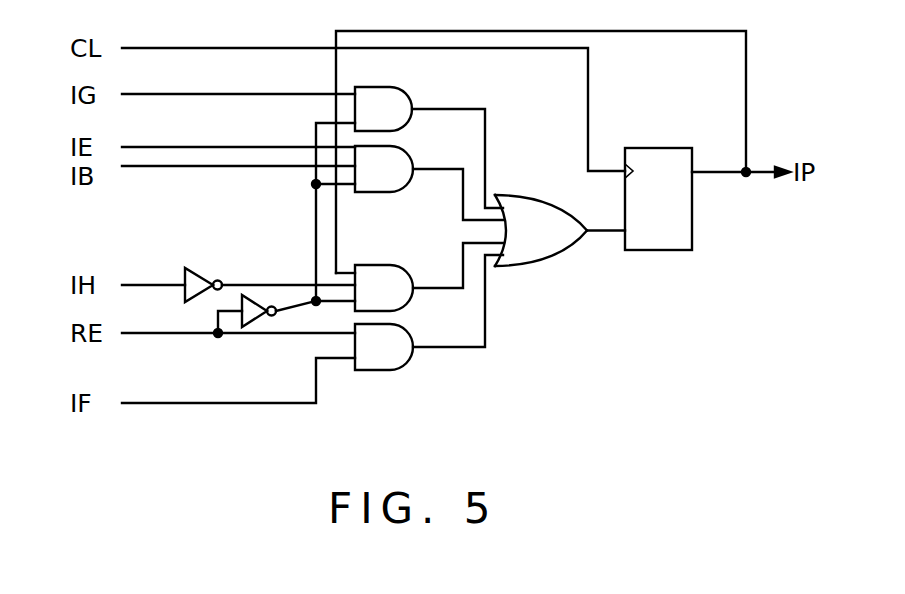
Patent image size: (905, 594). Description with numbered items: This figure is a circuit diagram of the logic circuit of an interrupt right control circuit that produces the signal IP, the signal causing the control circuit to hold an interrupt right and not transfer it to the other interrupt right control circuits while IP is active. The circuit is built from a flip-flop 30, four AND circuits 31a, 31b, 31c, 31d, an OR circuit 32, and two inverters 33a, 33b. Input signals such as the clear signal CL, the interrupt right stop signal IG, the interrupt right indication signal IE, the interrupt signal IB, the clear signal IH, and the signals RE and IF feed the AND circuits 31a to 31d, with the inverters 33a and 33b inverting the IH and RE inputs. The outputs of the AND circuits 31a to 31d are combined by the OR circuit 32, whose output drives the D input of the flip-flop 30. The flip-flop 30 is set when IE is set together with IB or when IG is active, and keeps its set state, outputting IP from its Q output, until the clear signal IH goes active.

The flip-flop 30 is at (693, 249).
The AND circuit 31a is at (400, 91).
The AND circuit 31b is at (438, 152).
The AND circuit 31c is at (436, 272).
The AND circuit 31d is at (438, 332).
The OR circuit 32 is at (571, 252).
The inverter 33a is at (199, 267).
The inverter 33b is at (252, 328).